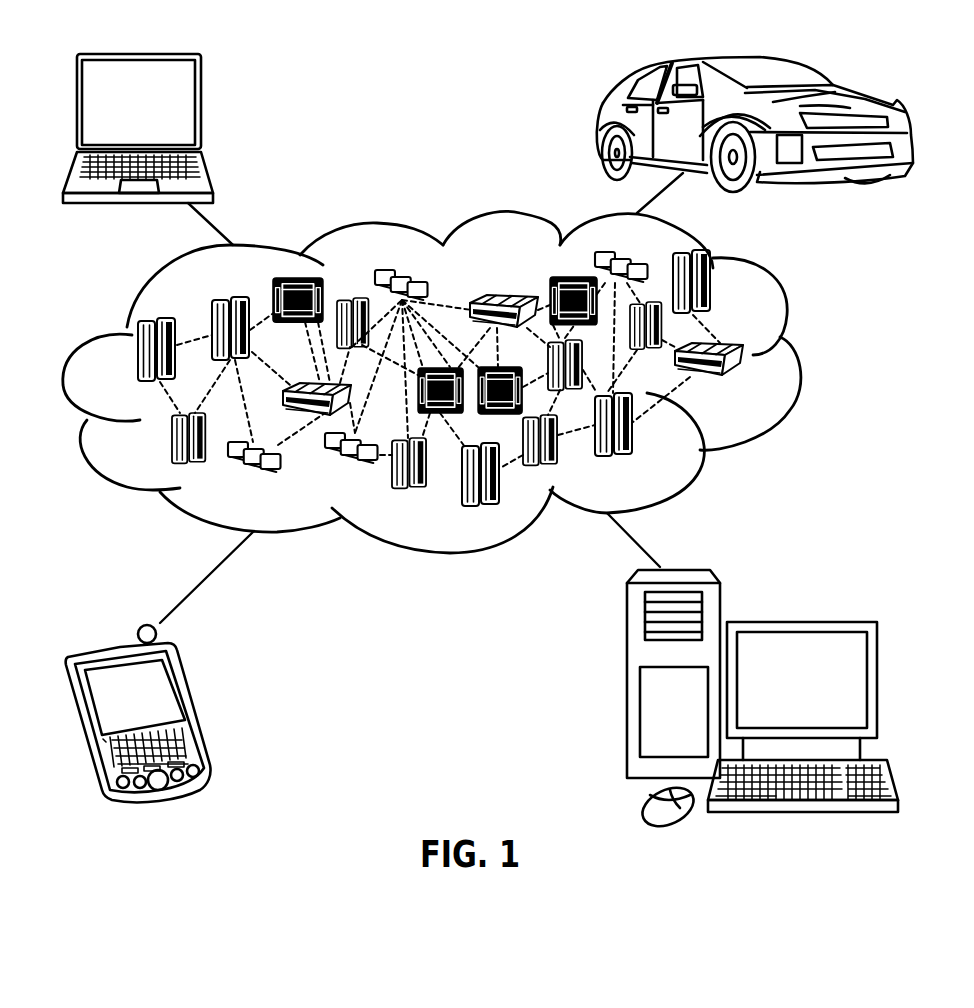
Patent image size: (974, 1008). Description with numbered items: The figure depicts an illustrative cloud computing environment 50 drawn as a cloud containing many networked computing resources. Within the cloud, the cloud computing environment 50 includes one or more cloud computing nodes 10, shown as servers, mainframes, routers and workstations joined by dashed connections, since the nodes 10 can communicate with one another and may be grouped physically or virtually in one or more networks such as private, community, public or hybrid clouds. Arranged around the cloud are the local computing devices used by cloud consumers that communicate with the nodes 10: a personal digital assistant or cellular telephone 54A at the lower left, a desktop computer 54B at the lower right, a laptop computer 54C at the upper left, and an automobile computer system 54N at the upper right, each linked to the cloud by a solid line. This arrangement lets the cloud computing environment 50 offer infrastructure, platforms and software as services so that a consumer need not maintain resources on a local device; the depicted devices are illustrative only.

The cloud computing node 10 is at (752, 389).
The cloud computing environment 50 is at (798, 360).
The personal digital assistant or cellular telephone 54A is at (190, 707).
The desktop computer 54B is at (798, 622).
The laptop computer 54C is at (202, 110).
The automobile computer system 54N is at (600, 120).